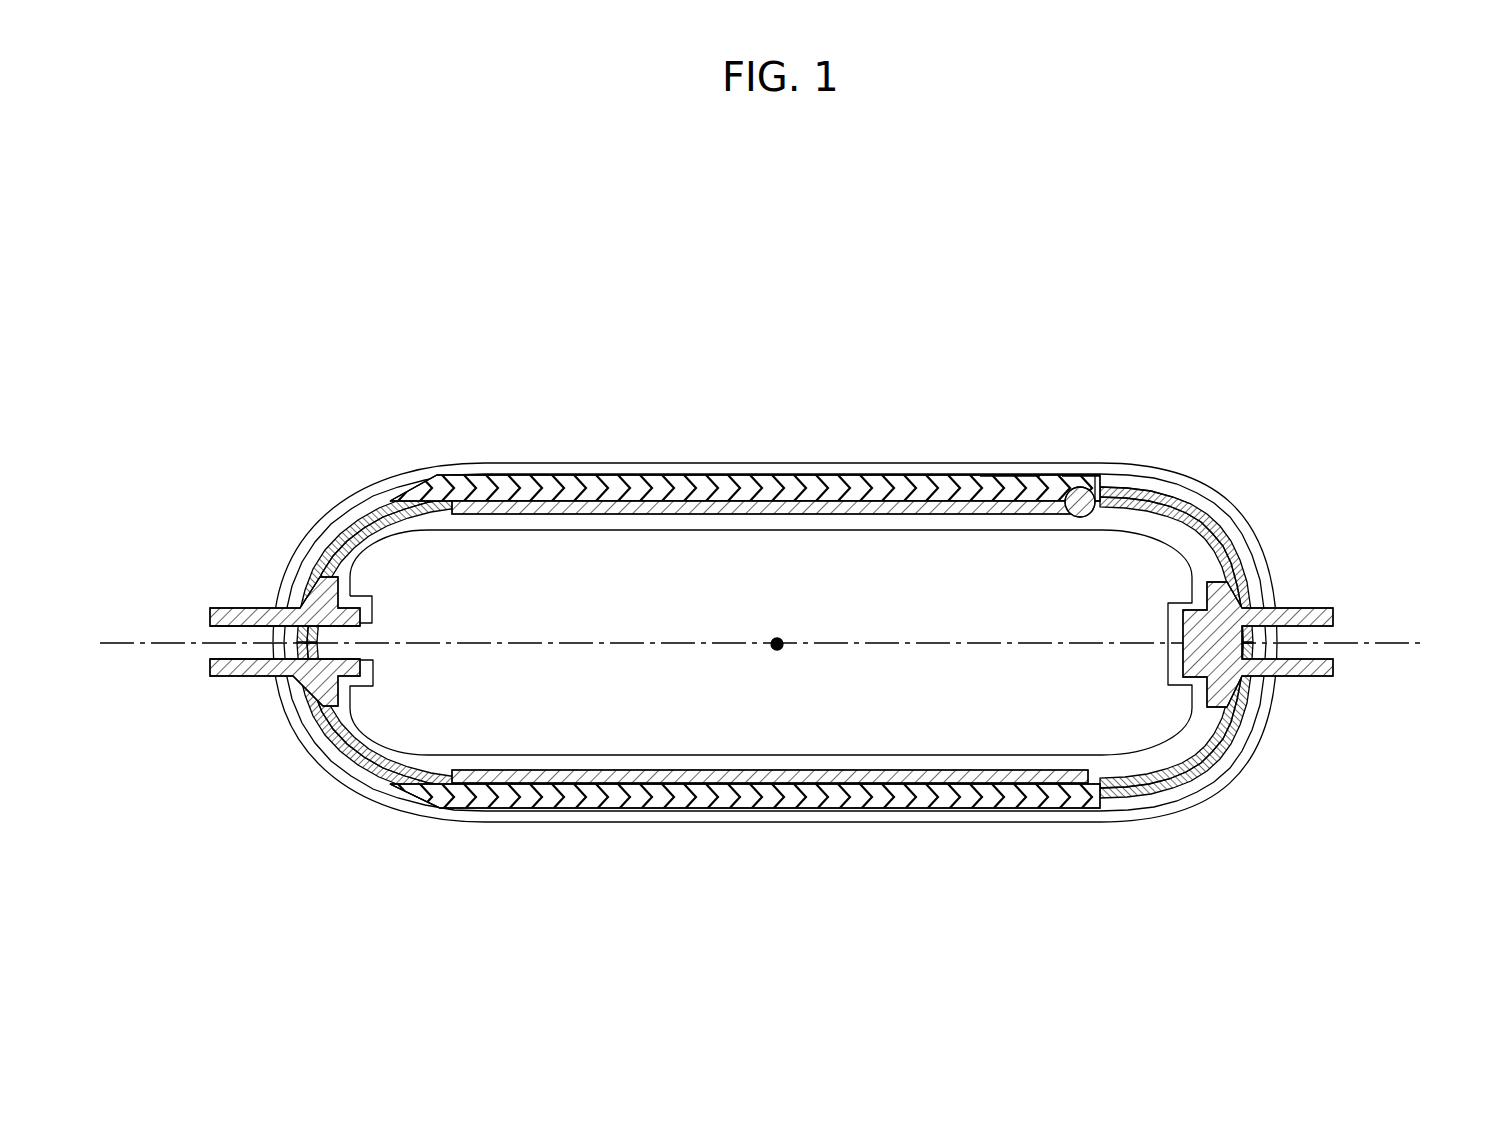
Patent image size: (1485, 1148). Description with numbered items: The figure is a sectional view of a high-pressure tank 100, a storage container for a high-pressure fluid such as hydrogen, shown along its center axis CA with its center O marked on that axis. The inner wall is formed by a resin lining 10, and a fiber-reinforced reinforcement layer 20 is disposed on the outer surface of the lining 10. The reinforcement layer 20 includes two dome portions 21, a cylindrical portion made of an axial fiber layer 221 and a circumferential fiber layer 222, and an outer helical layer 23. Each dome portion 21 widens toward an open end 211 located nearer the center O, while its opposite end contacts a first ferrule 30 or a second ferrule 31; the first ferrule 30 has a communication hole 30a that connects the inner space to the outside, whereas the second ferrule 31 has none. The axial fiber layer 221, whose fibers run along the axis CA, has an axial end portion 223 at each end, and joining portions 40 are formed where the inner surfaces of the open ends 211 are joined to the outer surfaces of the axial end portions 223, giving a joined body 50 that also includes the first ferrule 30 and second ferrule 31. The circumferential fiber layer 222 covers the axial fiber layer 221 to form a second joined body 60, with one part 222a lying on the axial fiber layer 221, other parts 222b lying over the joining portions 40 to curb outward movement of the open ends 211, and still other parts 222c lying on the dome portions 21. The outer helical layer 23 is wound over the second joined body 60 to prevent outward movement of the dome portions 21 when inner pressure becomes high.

The high-pressure tank 100 is at (1252, 317).
The lining 10 is at (612, 518).
The reinforcement layer 20 is at (633, 240).
The dome portion 21 is at (336, 538).
The outer helical layer 23 is at (700, 463).
The first ferrule 30 is at (235, 677).
The communication hole 30a is at (218, 652).
The second ferrule 31 is at (1292, 680).
The joining portion 40 is at (1068, 505).
The joined body 50 is at (482, 387).
The second joined body 60 is at (572, 310).
The open end 211 is at (1098, 515).
The axial fiber layer 221 is at (540, 488).
The circumferential fiber layer 222 is at (620, 474).
The part of the circumferential fiber layer 222a is at (1000, 478).
The part of the circumferential fiber layer 222b is at (1088, 494).
The part of the circumferential fiber layer 222c is at (1167, 492).
The axial end portion 223 is at (1075, 514).
The center O is at (780, 640).
The axis CA is at (782, 647).